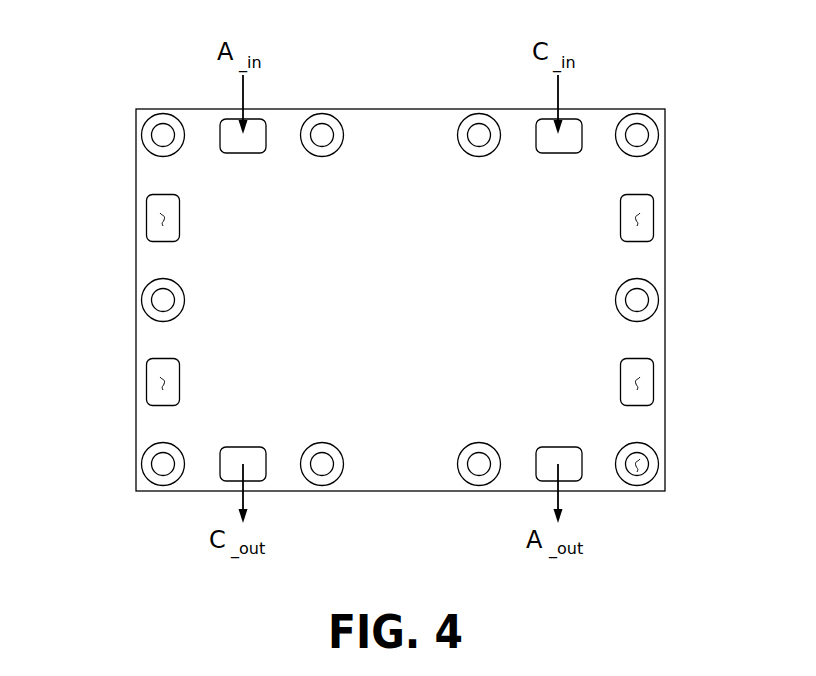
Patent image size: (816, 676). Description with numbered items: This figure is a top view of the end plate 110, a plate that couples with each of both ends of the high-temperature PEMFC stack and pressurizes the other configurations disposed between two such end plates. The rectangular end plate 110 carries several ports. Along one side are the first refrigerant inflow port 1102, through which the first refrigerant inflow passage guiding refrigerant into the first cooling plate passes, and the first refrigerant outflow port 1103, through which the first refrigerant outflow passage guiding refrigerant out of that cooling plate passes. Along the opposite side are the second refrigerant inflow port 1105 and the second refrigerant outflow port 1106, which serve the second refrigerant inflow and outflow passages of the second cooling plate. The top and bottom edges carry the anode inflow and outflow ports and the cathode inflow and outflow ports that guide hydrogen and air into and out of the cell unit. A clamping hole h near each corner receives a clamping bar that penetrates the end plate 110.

The end plate 110 is at (168, 99).
The first refrigerant inflow port 1102 is at (637, 219).
The first refrigerant outflow port 1103 is at (637, 385).
The second refrigerant inflow port 1105 is at (163, 219).
The second refrigerant outflow port 1106 is at (163, 383).
The clamping hole h is at (641, 465).